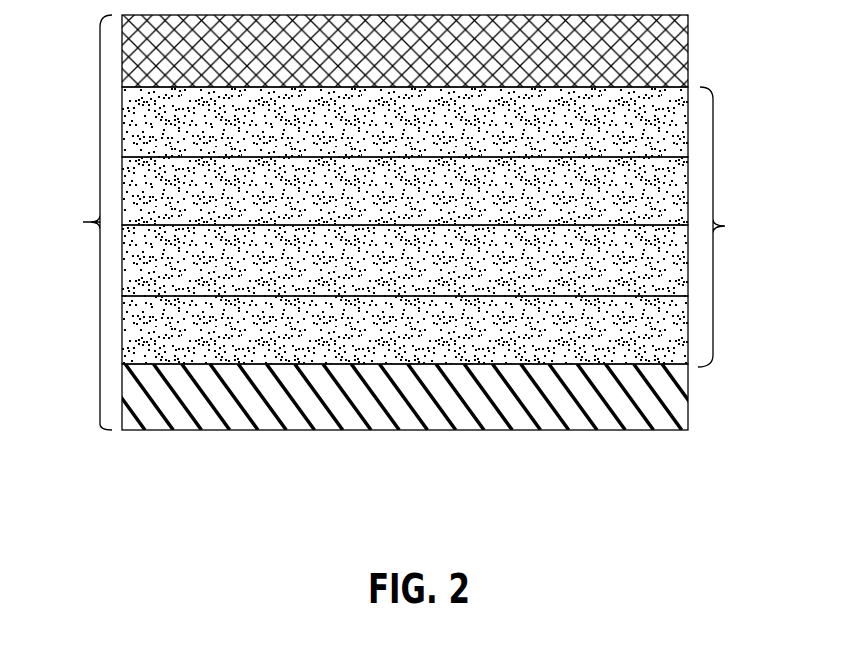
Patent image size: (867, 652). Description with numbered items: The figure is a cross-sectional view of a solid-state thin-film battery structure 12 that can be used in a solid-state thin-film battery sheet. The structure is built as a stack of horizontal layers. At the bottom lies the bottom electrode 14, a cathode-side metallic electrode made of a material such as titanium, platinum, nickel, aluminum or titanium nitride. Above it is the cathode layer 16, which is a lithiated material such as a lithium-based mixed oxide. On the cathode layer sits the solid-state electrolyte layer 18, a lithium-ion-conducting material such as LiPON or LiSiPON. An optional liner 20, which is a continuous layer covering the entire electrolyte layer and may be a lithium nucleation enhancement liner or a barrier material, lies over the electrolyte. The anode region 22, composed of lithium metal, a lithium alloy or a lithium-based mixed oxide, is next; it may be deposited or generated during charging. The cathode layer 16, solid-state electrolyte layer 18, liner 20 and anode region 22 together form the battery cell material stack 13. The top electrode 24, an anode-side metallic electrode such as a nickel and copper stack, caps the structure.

The solid-state thin-film battery structure 12 is at (82, 222).
The battery cell material stack 13 is at (731, 227).
The bottom electrode 14 is at (431, 409).
The cathode layer 16 is at (431, 342).
The solid-state electrolyte layer 18 is at (431, 276).
The liner 20 is at (431, 207).
The anode region 22 is at (431, 137).
The top electrode 24 is at (431, 64).